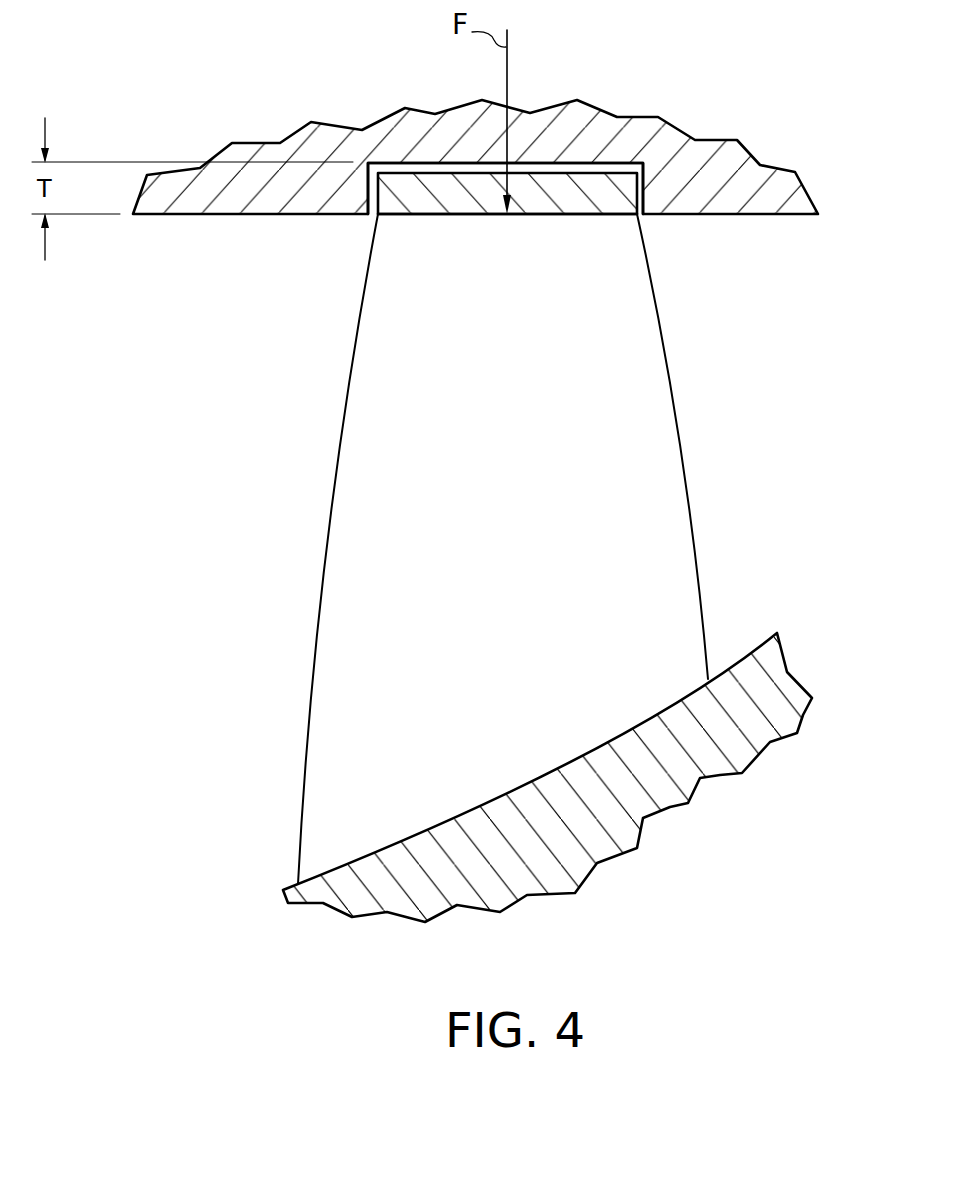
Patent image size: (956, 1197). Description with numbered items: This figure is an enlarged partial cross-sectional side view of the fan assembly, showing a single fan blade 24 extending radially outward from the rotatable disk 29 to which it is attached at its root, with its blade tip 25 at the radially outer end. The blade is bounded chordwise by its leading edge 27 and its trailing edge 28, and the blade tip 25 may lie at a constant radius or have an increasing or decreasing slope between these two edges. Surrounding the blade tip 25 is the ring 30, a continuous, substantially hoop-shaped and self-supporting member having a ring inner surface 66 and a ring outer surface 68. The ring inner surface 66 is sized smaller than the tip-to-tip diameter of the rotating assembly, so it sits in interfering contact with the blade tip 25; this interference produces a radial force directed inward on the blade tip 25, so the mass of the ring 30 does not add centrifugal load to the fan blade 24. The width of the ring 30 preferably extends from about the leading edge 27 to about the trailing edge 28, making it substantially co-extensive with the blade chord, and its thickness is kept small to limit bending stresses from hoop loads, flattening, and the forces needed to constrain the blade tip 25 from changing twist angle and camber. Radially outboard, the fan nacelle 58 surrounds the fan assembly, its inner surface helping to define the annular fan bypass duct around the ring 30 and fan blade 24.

The fan blade 24 is at (506, 590).
The blade tip 25 is at (403, 208).
The leading edge 27 is at (332, 500).
The trailing edge 28 is at (677, 420).
The rotatable disk 29 is at (567, 849).
The ring 30 is at (583, 180).
The fan nacelle 58 is at (772, 213).
The ring inner surface 66 is at (433, 215).
The ring outer surface 68 is at (445, 174).